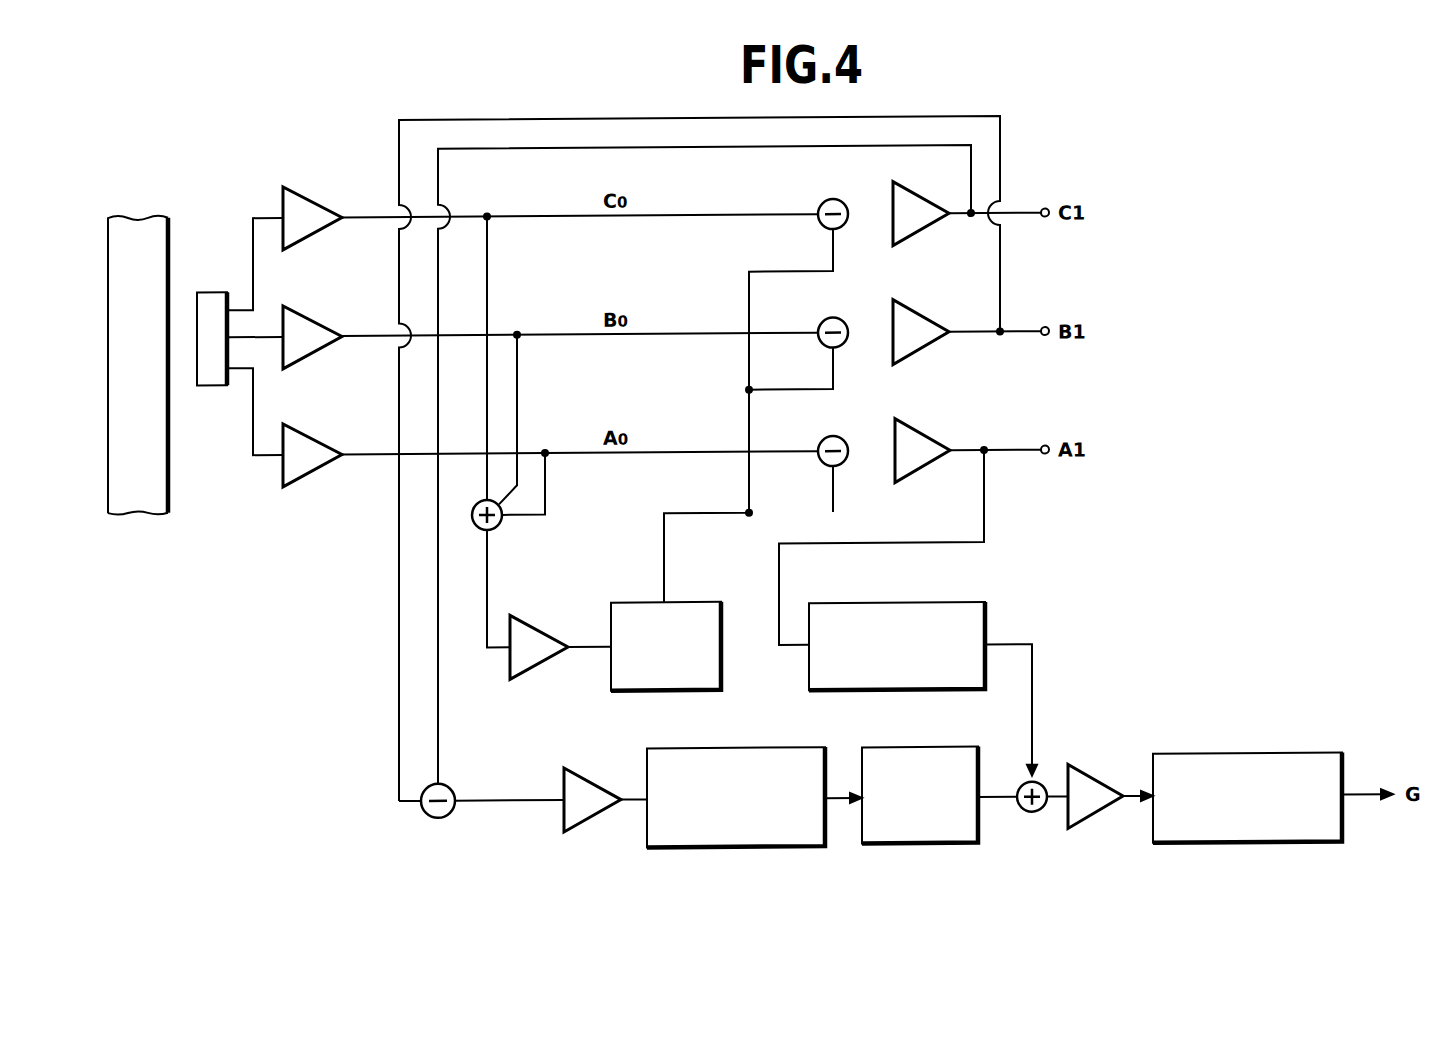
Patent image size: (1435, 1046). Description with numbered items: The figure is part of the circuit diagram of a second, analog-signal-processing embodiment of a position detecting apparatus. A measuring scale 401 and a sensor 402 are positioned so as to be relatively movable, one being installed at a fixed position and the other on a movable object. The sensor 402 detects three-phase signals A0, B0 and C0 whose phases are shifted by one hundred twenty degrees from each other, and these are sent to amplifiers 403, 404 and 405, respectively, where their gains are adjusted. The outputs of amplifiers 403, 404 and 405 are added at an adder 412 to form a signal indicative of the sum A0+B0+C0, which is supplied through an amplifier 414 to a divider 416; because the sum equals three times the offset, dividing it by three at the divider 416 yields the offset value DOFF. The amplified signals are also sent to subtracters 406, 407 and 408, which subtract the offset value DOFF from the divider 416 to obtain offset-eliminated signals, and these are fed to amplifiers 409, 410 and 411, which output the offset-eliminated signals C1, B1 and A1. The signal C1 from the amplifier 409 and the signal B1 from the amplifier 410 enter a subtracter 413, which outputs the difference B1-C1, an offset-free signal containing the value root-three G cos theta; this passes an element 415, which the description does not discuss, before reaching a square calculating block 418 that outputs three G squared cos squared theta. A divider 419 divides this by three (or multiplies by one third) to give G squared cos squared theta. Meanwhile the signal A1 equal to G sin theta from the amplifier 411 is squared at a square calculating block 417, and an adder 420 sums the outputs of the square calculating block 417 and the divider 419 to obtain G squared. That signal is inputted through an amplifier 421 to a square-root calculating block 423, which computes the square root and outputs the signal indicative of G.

The measuring scale 401 is at (138, 491).
The sensor 402 is at (210, 382).
The amplifier 403 is at (320, 198).
The amplifier 404 is at (318, 319).
The amplifier 405 is at (320, 434).
The subtracter 406 is at (823, 200).
The subtracter 407 is at (823, 318).
The subtracter 408 is at (831, 438).
The amplifier 409 is at (917, 201).
The amplifier 410 is at (920, 307).
The amplifier 411 is at (921, 439).
The adder 412 is at (500, 526).
The subtracter 413 is at (445, 816).
The amplifier 414 is at (540, 635).
The amplifier 415 is at (593, 815).
The divider 416 is at (695, 602).
The square calculating block 417 is at (965, 605).
The square calculating block 418 is at (762, 838).
The divider 419 is at (943, 839).
The adder 420 is at (1035, 815).
The amplifier 421 is at (1090, 777).
The square-root calculating block 423 is at (1262, 760).